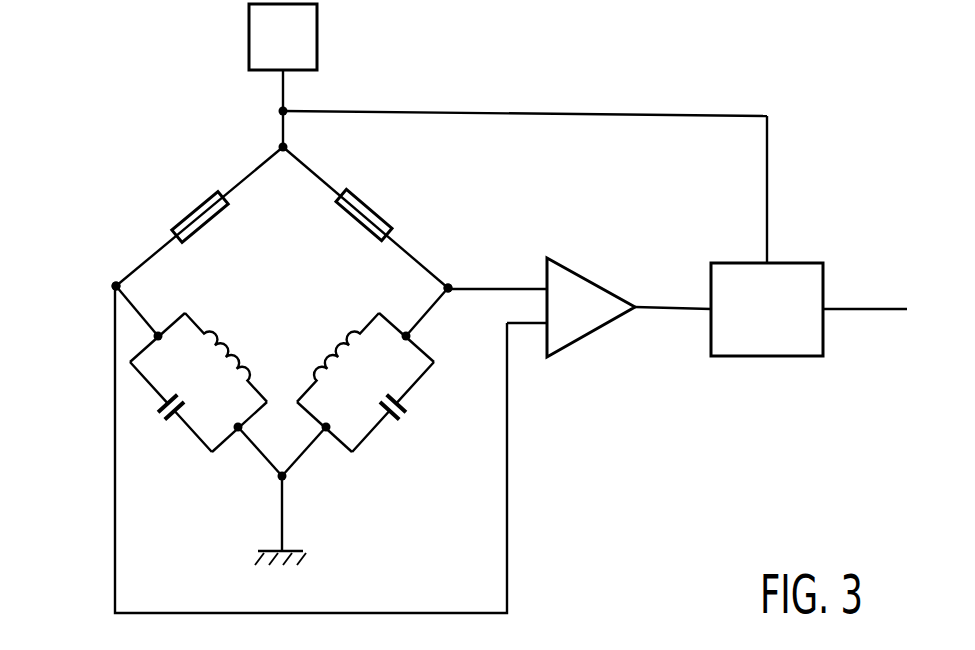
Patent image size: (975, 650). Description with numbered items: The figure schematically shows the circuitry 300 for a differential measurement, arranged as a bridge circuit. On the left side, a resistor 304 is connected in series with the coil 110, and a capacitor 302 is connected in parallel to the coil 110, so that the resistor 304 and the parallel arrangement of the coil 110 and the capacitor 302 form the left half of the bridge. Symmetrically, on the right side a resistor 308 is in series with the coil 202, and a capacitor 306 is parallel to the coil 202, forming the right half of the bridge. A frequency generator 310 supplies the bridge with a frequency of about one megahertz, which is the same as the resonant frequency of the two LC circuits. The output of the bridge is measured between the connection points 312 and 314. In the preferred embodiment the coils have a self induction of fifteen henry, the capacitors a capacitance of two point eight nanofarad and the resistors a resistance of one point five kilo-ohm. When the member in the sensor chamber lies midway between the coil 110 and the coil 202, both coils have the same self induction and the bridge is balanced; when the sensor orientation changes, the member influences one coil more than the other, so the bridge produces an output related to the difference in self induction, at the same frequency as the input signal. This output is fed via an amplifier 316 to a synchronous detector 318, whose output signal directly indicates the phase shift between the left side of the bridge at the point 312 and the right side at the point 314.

The circuitry 300 is at (680, 560).
The coil 110 is at (225, 338).
The coil 202 is at (340, 340).
The capacitor 302 is at (165, 420).
The resistor 304 is at (196, 212).
The capacitor 306 is at (397, 420).
The resistor 308 is at (375, 212).
The frequency generator 310 is at (310, 40).
The connection point 312 is at (108, 283).
The connection point 314 is at (455, 280).
The amplifier 316 is at (588, 325).
The synchronous detector 318 is at (774, 344).